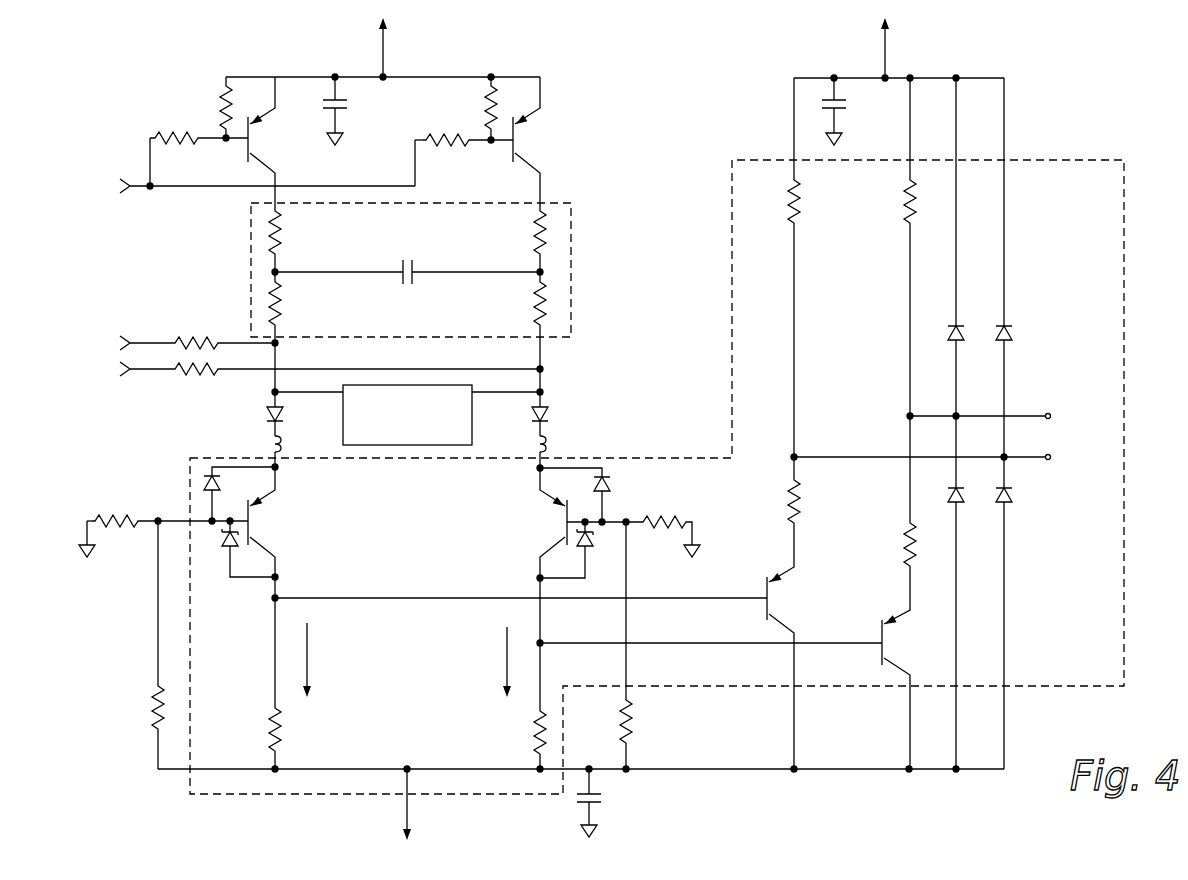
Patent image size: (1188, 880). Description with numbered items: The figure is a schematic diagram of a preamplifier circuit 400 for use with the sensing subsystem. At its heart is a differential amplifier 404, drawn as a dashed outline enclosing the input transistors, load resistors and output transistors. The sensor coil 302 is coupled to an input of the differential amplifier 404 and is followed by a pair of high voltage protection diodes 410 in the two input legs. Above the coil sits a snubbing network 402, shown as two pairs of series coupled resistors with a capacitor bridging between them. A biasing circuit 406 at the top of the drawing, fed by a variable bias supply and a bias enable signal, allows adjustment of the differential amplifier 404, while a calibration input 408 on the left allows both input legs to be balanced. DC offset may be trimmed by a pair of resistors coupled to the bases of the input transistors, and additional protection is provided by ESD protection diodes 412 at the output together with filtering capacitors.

The sensor circuit 400 is at (116, 802).
The snubbing network 402 is at (562, 203).
The differential amplifier 404 is at (1088, 160).
The biasing circuit 406 is at (236, 65).
The calibration input 408 is at (108, 353).
The high voltage protection diodes 410 is at (258, 431).
The ESD protection diodes 412 is at (1032, 386).
The sensor coil 302 is at (407, 394).